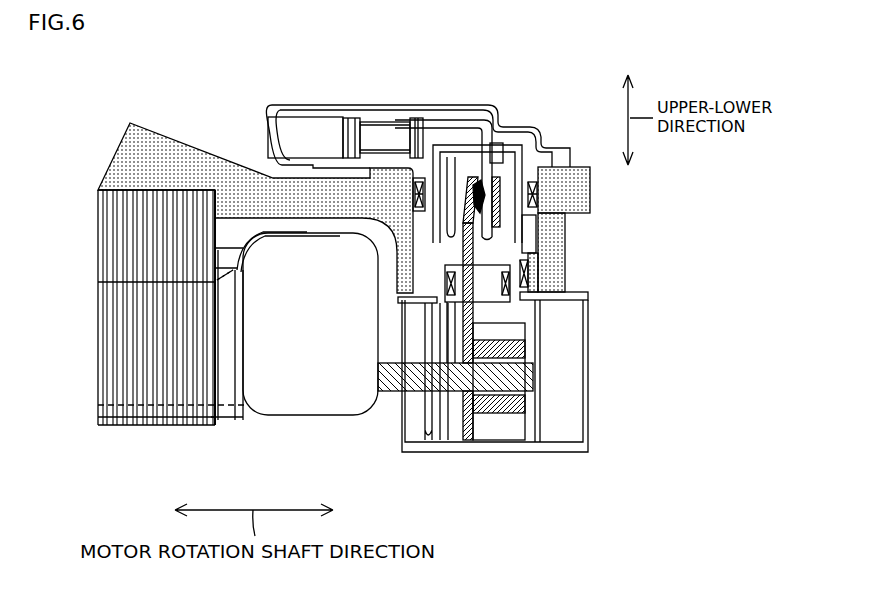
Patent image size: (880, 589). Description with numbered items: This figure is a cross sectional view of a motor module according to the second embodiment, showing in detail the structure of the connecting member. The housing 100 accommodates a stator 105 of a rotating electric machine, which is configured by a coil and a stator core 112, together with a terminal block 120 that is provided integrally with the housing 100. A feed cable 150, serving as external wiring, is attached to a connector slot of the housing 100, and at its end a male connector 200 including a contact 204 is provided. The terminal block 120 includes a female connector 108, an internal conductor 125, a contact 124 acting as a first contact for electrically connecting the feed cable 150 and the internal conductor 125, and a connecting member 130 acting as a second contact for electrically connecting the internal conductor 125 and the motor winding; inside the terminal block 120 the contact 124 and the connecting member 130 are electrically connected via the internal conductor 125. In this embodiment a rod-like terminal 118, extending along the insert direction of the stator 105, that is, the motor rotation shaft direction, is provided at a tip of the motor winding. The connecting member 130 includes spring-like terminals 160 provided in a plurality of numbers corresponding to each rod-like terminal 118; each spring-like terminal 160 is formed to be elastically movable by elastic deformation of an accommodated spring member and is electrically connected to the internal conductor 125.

The housing 100 is at (161, 160).
The stator 105 is at (303, 431).
The female connector 108 is at (563, 215).
The stator core 112 is at (130, 410).
The rod-like terminal 118 is at (383, 378).
The terminal block 120 is at (588, 295).
The contact 124 is at (478, 200).
The internal conductor 125 is at (563, 252).
The connecting member 130 is at (608, 340).
The feed cable 150 is at (290, 53).
The spring-like terminal 160 is at (510, 350).
The male connector 200 is at (528, 125).
The contact 204 is at (468, 120).